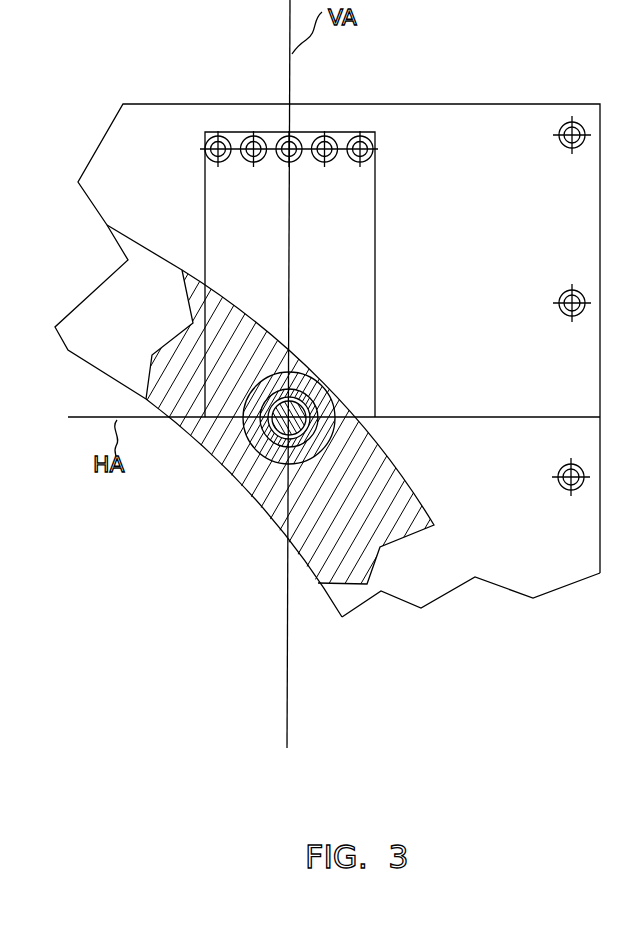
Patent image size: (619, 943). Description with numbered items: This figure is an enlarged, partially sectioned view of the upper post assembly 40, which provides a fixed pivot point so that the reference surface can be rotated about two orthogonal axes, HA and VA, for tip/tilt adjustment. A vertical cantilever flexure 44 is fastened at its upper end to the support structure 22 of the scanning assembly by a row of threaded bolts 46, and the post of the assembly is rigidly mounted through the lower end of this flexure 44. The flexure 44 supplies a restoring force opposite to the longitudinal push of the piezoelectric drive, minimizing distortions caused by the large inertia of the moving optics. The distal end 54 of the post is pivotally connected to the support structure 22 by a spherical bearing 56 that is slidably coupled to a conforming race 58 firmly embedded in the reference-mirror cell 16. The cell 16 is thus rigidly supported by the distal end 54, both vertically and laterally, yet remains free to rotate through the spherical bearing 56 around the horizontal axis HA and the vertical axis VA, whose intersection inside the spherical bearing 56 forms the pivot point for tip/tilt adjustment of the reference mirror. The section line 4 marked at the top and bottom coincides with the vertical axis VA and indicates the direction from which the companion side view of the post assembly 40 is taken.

The section line 4— 4 is at (302, 24).
The reference-mirror cell 16 is at (423, 566).
The support structure 22 is at (510, 120).
The post assembly 40 is at (392, 373).
The cantilever flexure 44 is at (357, 243).
The threaded bolts 46 is at (330, 148).
The distal end of the post 54 is at (248, 435).
The spherical bearing 56 is at (307, 397).
The conforming race 58 is at (296, 382).